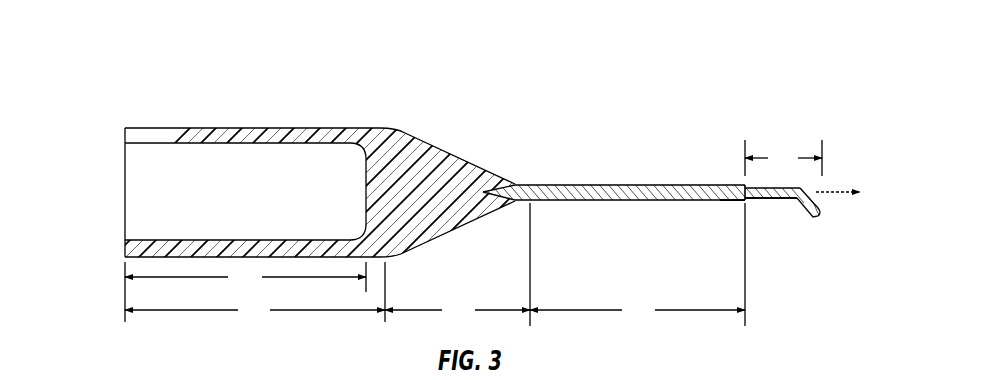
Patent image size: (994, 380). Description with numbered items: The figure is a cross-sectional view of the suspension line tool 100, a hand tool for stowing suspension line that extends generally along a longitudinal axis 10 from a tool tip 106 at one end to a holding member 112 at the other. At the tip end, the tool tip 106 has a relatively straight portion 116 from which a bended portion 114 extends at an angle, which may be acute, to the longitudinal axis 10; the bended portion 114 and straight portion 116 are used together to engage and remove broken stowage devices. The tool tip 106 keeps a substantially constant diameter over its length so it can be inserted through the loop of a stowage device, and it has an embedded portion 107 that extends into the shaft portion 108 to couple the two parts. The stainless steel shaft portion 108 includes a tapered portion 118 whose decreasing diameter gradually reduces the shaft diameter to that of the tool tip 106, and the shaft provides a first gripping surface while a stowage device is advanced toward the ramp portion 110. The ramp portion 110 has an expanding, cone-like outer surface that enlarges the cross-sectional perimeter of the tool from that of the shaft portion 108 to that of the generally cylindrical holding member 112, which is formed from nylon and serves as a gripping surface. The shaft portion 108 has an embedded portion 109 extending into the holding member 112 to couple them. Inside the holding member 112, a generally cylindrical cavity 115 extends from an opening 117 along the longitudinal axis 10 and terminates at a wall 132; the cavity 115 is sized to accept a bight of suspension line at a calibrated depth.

The suspension line tool 100 is at (186, 57).
The holding member 112 is at (290, 127).
The opening 117 is at (141, 172).
The cavity 115 is at (264, 204).
The wall 132 is at (403, 137).
The ramp portion 110 is at (470, 163).
The embedded portion 109 is at (503, 204).
The shaft portion 108 is at (618, 186).
The embedded portion 107 is at (738, 186).
The tapered portion 118 is at (745, 201).
The straight portion 116 is at (749, 202).
The tool tip 106 is at (790, 125).
The bended portion 114 is at (819, 217).
The longitudinal axis 10 is at (830, 186).